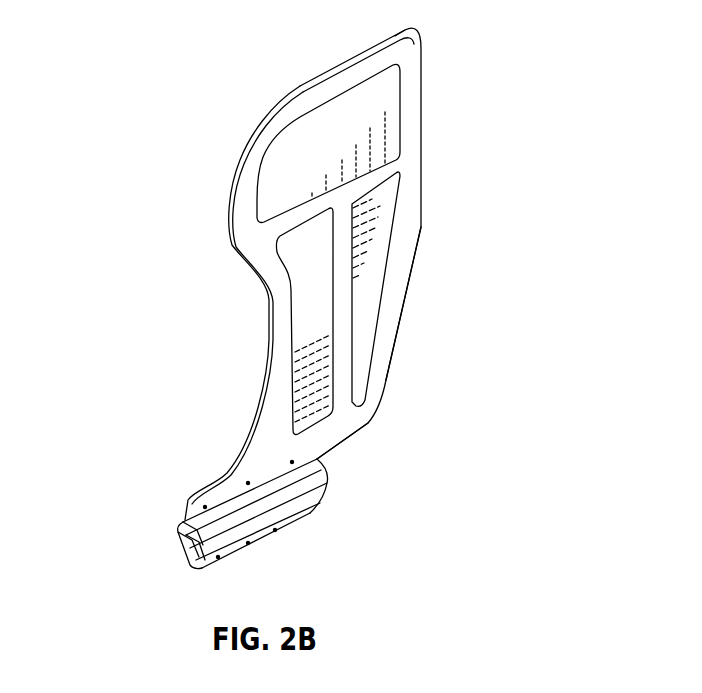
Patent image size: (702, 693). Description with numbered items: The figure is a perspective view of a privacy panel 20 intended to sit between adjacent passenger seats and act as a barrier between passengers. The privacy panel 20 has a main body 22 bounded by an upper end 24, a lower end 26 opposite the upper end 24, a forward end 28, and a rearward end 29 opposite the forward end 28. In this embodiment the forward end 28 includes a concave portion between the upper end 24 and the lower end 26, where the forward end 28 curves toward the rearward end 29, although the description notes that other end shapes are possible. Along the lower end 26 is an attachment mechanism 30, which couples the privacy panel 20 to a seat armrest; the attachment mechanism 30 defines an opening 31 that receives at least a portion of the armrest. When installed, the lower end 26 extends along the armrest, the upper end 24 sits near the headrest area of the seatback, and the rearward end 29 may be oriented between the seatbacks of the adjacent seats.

The privacy panel 20 is at (188, 111).
The main body 22 is at (390, 208).
The upper end 24 is at (327, 75).
The lower end 26 is at (333, 437).
The forward end 28 is at (272, 357).
The rearward end 29 is at (395, 315).
The attachment mechanism 30 is at (285, 508).
The opening 31 is at (217, 543).